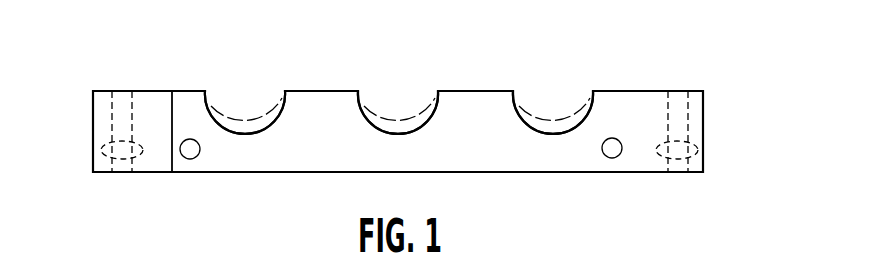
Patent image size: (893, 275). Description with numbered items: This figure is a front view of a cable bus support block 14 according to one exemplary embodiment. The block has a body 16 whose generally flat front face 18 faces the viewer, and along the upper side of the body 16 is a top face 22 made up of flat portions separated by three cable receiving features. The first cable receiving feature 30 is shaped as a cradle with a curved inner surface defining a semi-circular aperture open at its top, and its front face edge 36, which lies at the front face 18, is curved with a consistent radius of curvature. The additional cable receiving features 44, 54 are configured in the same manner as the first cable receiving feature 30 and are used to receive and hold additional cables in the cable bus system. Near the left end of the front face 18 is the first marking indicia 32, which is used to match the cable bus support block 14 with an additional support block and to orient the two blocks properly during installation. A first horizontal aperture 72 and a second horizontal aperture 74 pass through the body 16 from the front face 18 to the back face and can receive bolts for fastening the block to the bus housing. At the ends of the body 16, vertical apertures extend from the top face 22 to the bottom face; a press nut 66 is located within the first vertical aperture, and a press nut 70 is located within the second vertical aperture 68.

The cable bus support block 14 is at (766, 76).
The body 16 is at (611, 99).
The front face 18 is at (485, 150).
The top face 22 is at (461, 84).
The first cable receiving feature 30 is at (236, 110).
The first marking indicia 32 is at (179, 99).
The front face edge 36 is at (278, 130).
The additional cable receiving feature 44 is at (388, 114).
The additional cable receiving feature 54 is at (548, 115).
The press nut 66 is at (100, 151).
The second vertical aperture 68 is at (703, 122).
The press nut 70 is at (703, 160).
The first horizontal aperture 72 is at (191, 159).
The second horizontal aperture 74 is at (612, 158).